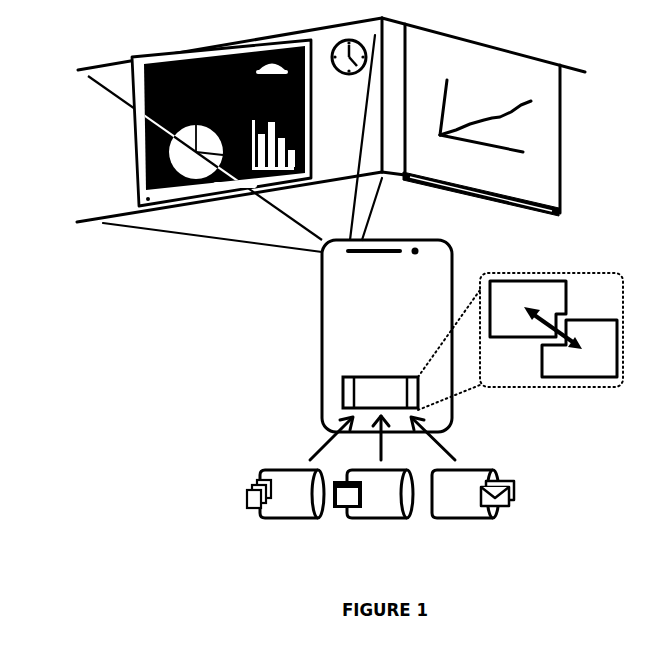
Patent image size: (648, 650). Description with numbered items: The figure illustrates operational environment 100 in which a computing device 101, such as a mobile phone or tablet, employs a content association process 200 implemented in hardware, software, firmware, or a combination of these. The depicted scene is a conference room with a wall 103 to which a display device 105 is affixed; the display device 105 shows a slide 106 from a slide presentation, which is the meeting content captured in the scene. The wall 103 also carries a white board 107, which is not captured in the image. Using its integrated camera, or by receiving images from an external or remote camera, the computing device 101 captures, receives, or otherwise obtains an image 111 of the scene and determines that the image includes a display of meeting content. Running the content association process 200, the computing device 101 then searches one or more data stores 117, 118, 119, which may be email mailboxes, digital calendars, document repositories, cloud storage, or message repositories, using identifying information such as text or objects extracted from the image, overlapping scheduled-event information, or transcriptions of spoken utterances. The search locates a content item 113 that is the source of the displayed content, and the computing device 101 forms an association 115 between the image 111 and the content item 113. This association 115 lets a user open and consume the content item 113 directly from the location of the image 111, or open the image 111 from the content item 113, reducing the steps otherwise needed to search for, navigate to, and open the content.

The operational environment 100 is at (28, 42).
The computing device 101 is at (374, 358).
The wall 103 is at (204, 140).
The display device 105 is at (131, 134).
The slide 106 is at (295, 111).
The white board 107 is at (550, 191).
The image 111 is at (521, 325).
The content item 113 is at (607, 343).
The association 115 is at (520, 341).
The data store 117 is at (309, 504).
The data store 118 is at (395, 504).
The data store 119 is at (465, 504).
The content association process 200 is at (367, 402).